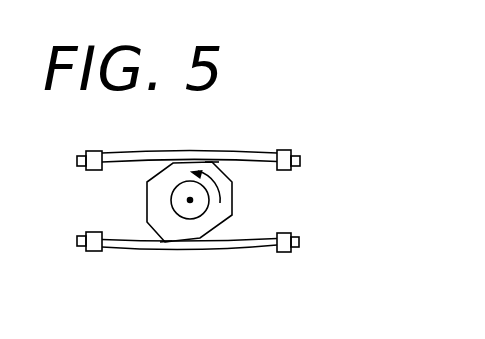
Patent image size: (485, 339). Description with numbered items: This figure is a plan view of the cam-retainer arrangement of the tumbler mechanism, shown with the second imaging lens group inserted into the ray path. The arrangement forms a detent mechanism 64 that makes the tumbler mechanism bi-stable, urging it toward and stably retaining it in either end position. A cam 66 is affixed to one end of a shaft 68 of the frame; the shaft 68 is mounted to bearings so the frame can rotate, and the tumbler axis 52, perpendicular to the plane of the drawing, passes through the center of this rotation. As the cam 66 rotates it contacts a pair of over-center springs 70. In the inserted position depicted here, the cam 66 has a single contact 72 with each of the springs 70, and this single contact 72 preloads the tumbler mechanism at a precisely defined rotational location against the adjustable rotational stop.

The tumbler axis 52 is at (190, 200).
The detent mechanism 64 is at (297, 146).
The cam 66 is at (232, 202).
The shaft 68 is at (171, 200).
The over-center springs 70 is at (253, 152).
The single contact 72 is at (212, 162).